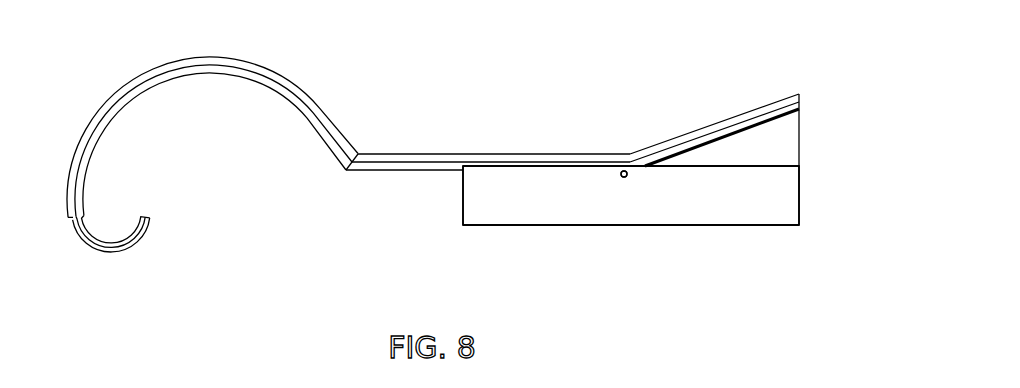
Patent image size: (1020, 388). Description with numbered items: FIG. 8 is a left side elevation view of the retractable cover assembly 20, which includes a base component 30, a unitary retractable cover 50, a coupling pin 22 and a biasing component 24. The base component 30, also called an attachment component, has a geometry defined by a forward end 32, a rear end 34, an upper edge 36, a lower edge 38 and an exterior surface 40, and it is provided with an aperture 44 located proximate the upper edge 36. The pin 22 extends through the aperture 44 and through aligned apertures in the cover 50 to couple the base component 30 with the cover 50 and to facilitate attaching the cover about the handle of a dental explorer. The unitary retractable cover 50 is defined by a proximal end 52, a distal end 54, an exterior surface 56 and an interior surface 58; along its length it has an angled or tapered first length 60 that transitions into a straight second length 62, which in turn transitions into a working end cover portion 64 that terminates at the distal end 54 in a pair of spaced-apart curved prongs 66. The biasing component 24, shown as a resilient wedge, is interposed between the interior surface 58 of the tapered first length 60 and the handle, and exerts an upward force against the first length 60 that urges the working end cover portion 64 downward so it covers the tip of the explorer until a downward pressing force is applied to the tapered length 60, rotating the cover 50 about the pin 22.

The retractable cover assembly 20 is at (486, 114).
The coupling pin 22 is at (623, 178).
The biasing component 24 is at (762, 140).
The base component 30 is at (732, 218).
The forward end 32 is at (463, 199).
The rear end 34 is at (800, 190).
The upper edge 36 is at (792, 165).
The lower edge 38 is at (659, 226).
The exterior surface 40 is at (526, 212).
The aperture 44 is at (621, 172).
The unitary retractable cover 50 is at (380, 147).
The proximal end 52 is at (800, 112).
The distal end 54 is at (164, 246).
The exterior surface 56 is at (408, 157).
The interior surface 58 is at (123, 113).
The angled first length 60 is at (705, 132).
The straight second length 62 is at (491, 158).
The working end cover portion 64 is at (218, 66).
The curved prongs 66 is at (124, 250).